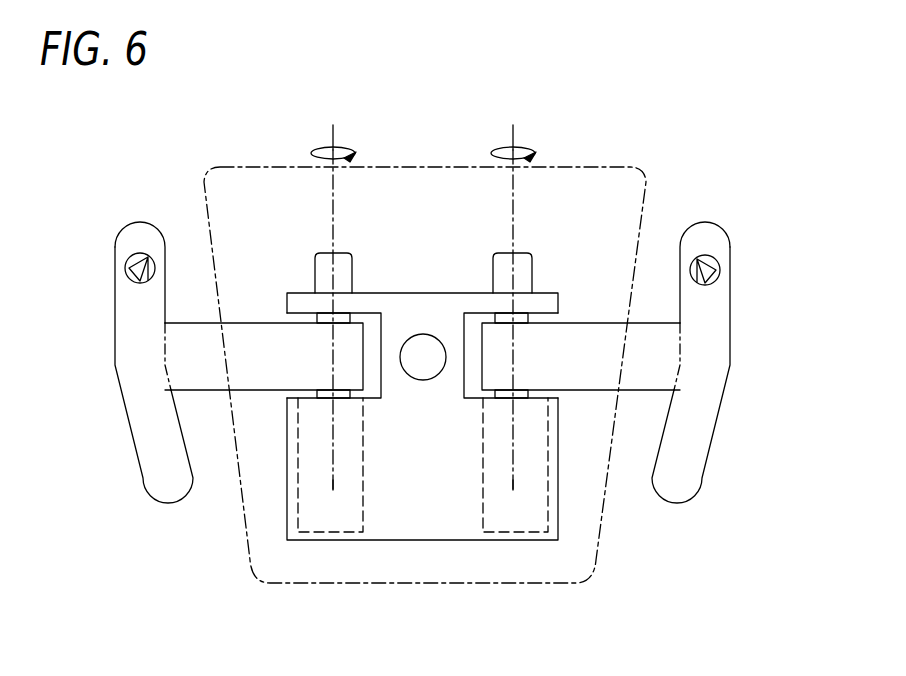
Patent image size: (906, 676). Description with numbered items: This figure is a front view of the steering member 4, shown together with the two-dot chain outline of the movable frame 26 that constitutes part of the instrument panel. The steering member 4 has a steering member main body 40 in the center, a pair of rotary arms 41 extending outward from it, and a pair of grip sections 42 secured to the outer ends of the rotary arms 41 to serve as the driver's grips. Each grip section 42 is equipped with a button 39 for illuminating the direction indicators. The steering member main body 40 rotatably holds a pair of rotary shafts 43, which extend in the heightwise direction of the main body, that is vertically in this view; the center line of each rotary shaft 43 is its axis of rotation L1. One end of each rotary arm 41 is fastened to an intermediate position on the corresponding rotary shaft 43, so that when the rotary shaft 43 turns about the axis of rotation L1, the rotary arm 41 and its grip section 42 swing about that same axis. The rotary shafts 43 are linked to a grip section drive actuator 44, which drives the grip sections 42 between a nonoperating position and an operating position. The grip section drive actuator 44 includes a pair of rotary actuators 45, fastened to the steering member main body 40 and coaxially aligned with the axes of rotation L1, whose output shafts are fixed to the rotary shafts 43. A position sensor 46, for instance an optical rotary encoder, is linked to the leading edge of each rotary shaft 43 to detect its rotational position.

The steering member 4 is at (179, 208).
The movable frame 26 is at (580, 178).
The axis of rotation L1 is at (332, 136).
The button 39 is at (128, 262).
The steering member main body 40 is at (425, 301).
The rotary arm 41 is at (246, 338).
The grip section 42 is at (128, 336).
The rotary shaft 43 is at (313, 318).
The grip section drive actuator 44 is at (547, 500).
The rotary actuator 45 is at (339, 520).
The position sensor 46 is at (340, 265).